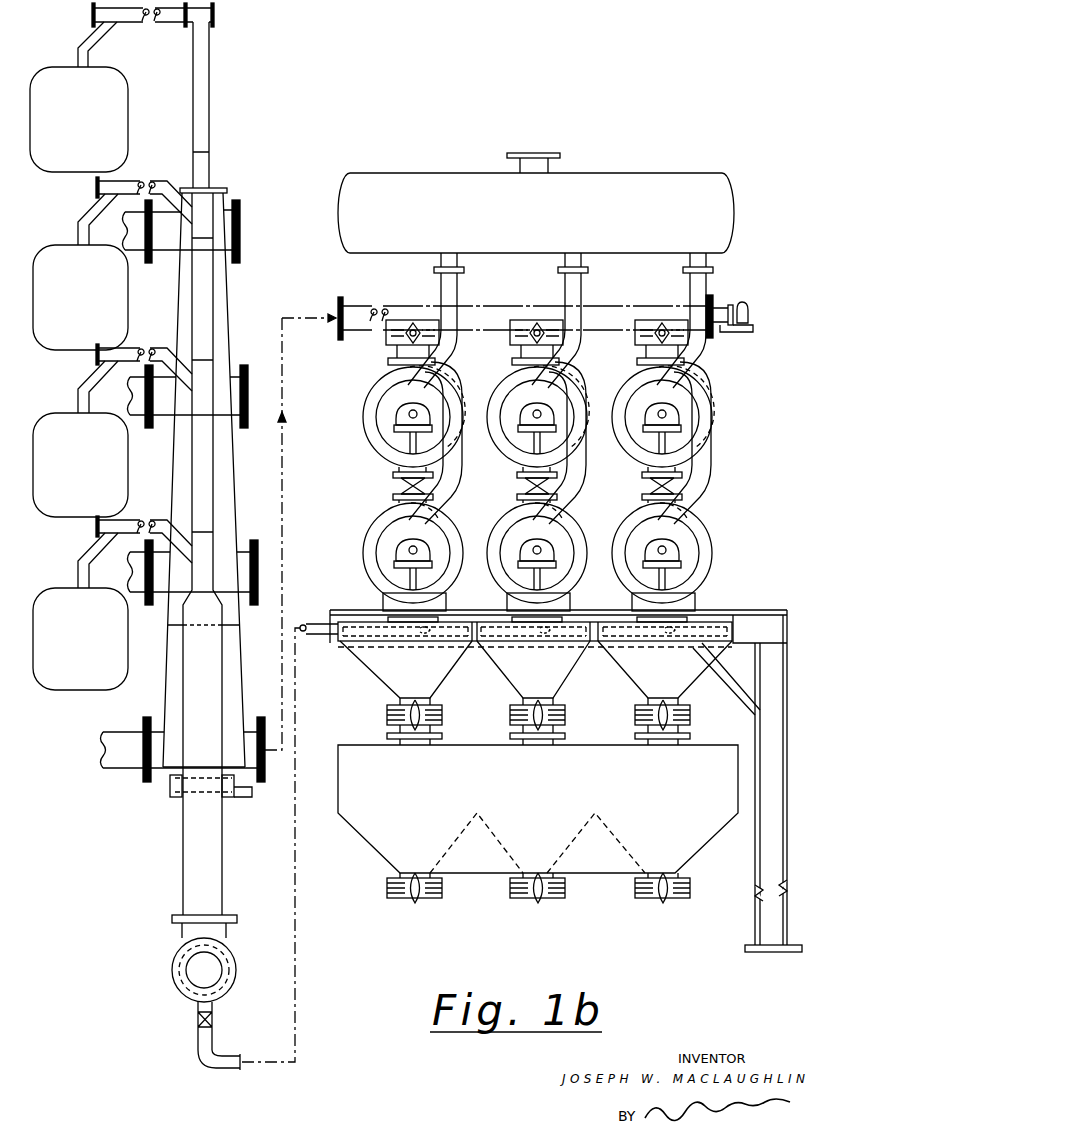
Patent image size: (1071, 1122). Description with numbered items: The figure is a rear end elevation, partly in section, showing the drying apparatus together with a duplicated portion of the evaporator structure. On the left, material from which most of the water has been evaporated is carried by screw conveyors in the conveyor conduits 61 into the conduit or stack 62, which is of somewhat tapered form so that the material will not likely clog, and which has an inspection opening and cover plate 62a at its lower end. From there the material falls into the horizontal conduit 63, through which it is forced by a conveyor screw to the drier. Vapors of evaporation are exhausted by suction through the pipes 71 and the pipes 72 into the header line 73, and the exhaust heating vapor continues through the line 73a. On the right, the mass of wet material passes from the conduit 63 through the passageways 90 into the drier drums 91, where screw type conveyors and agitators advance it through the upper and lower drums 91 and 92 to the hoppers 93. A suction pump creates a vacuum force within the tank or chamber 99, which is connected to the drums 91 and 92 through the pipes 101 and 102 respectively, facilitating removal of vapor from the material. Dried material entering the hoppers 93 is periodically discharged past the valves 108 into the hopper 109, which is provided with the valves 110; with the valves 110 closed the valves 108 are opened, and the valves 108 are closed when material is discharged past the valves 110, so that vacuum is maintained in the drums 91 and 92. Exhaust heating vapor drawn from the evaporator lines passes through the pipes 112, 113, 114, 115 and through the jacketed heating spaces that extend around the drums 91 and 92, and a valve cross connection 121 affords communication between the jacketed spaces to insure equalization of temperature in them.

The conveyor conduit 61 is at (128, 253).
The conduit or stack 62 is at (226, 306).
The inspection opening and cover plate 62a is at (170, 790).
The horizontal conduit 63 is at (123, 763).
The pipe 71 is at (90, 40).
The pipe 72 is at (145, 22).
The header line 73 is at (210, 485).
The line 73a is at (173, 962).
The passageway 90 is at (388, 354).
The drier drum 91 is at (553, 397).
The drier drum 92 is at (703, 542).
The hopper 93 is at (383, 676).
The tank or chamber 99 is at (587, 182).
The pipe 101 is at (458, 348).
The pipe 102 is at (457, 450).
The valve 108 is at (387, 717).
The hopper 109 is at (390, 850).
The valve 110 is at (398, 897).
The pipe 112 is at (295, 855).
The pipe 113 is at (428, 645).
The pipe 114 is at (547, 645).
The pipe 115 is at (668, 645).
The valve cross connection 121 is at (400, 486).